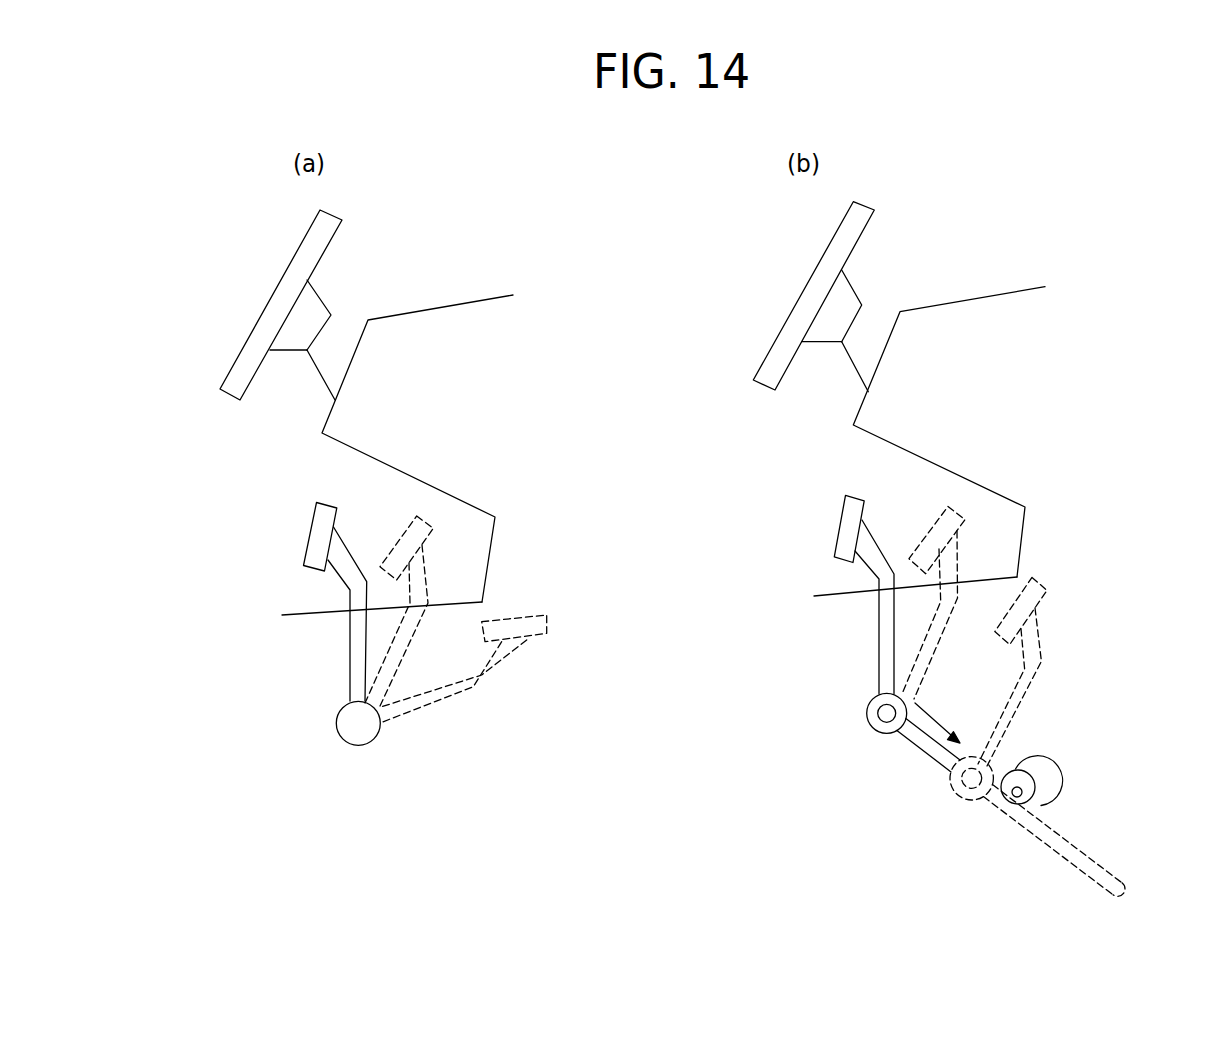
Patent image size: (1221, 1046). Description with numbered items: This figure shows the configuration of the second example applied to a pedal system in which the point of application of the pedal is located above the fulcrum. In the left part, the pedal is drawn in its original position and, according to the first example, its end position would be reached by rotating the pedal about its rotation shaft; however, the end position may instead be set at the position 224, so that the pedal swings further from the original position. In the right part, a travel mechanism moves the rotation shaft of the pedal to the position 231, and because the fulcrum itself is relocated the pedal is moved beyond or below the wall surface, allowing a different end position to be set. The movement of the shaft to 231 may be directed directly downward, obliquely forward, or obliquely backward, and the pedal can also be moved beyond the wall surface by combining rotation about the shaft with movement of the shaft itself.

The end position 224 is at (535, 627).
The moved rotation shaft position 231 is at (974, 784).